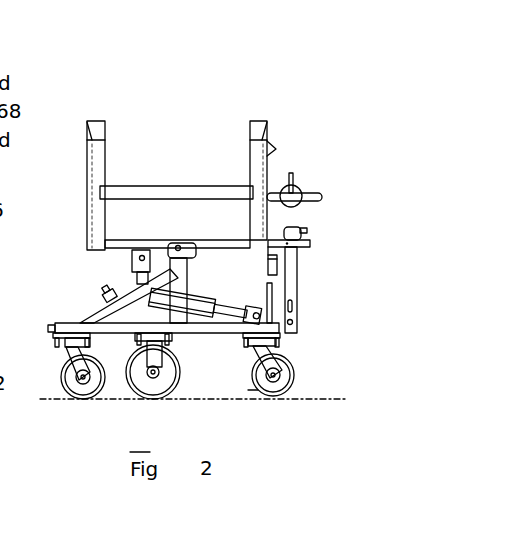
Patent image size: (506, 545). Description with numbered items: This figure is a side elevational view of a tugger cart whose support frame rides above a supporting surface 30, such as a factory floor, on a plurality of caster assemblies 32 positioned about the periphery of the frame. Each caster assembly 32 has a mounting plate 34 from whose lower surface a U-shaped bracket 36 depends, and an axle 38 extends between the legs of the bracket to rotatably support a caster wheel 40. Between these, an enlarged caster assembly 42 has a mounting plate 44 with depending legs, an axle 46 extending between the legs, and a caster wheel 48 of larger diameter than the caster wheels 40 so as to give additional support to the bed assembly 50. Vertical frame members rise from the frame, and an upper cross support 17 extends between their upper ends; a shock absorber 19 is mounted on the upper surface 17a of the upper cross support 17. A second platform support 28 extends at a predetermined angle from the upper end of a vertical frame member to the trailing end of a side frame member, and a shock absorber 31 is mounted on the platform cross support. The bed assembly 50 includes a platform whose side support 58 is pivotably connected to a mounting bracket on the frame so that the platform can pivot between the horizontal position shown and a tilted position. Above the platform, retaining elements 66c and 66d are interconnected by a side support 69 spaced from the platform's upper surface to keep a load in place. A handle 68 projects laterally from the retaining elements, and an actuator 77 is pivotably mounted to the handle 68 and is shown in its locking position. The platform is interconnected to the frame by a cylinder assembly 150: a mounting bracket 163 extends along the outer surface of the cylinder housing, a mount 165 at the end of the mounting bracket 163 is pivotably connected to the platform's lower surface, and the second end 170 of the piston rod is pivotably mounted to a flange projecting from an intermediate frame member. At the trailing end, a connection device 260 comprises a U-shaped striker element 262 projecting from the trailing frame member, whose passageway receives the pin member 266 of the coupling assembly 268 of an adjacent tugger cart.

The upper cross support 17 is at (198, 302).
The upper surface 17a is at (204, 278).
The shock absorber 19 is at (203, 252).
The second platform support 28 is at (106, 312).
The supporting surface 30 is at (308, 399).
The shock absorber 31 is at (104, 296).
The caster assembly 32 is at (75, 400).
The mounting plate 34 is at (58, 345).
The U-shaped bracket 36 is at (107, 400).
The axle 38 is at (87, 402).
The caster wheel 40 is at (66, 376).
The enlarged caster assembly 42 is at (160, 378).
The mounting plate 44 is at (180, 343).
The axle 46 is at (188, 393).
The caster wheel 48 is at (181, 383).
The bed assembly 50 is at (82, 238).
The side support 58 is at (124, 249).
The retaining element 66c is at (106, 121).
The retaining element 66d is at (250, 120).
The handle 68 is at (324, 199).
The side support 69 is at (175, 191).
The actuator 77 is at (310, 186).
The cylinder assembly 150 is at (129, 284).
The mounting bracket 163 is at (147, 304).
The mount 165 is at (129, 285).
The second end 170 is at (258, 307).
The connection device 260 is at (304, 311).
The U-shaped striker element 262 is at (50, 328).
The pin member 266 is at (315, 278).
The coupling assembly 268 is at (313, 249).